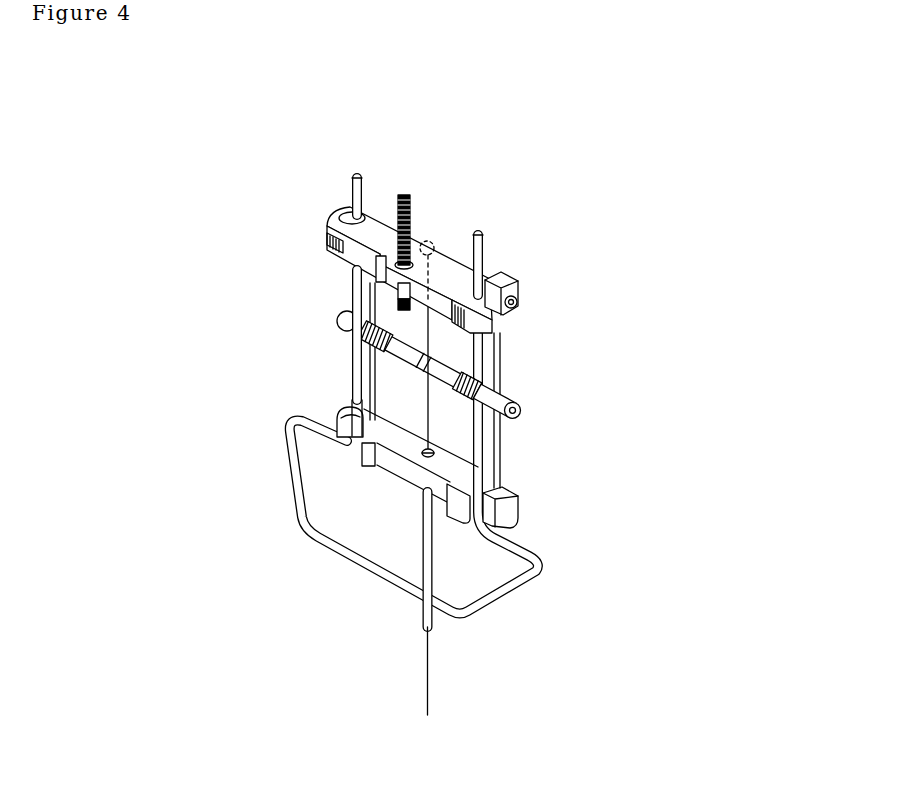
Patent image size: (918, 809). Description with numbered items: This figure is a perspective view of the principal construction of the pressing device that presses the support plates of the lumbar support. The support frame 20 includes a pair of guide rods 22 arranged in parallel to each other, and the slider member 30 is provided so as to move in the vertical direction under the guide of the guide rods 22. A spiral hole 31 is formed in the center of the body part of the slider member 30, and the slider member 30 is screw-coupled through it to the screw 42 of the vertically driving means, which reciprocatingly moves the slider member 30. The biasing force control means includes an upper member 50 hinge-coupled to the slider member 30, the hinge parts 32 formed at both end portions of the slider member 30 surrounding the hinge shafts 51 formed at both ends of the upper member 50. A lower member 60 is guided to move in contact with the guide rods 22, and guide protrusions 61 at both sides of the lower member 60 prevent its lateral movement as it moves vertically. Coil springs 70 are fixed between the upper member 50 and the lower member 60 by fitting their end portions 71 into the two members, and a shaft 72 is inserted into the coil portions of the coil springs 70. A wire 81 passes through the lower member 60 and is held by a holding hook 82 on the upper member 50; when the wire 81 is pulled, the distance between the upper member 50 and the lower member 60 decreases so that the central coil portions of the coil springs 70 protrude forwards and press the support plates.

The support frame 20 is at (331, 548).
The guide rods 22 is at (353, 190).
The slider member 30 is at (350, 262).
The spiral hole 31 is at (373, 287).
The hinge parts 32 is at (518, 295).
The screw 42 is at (407, 202).
The upper member 50 is at (453, 257).
The hinge shafts 51 is at (517, 312).
The lower member 60 is at (517, 512).
The guide protrusions 61 is at (360, 444).
The coil springs 70 is at (370, 332).
The end portions of the coil springs 71 is at (370, 407).
The shaft 72 is at (520, 414).
The wire 81 is at (425, 405).
The holding hook 82 is at (432, 247).